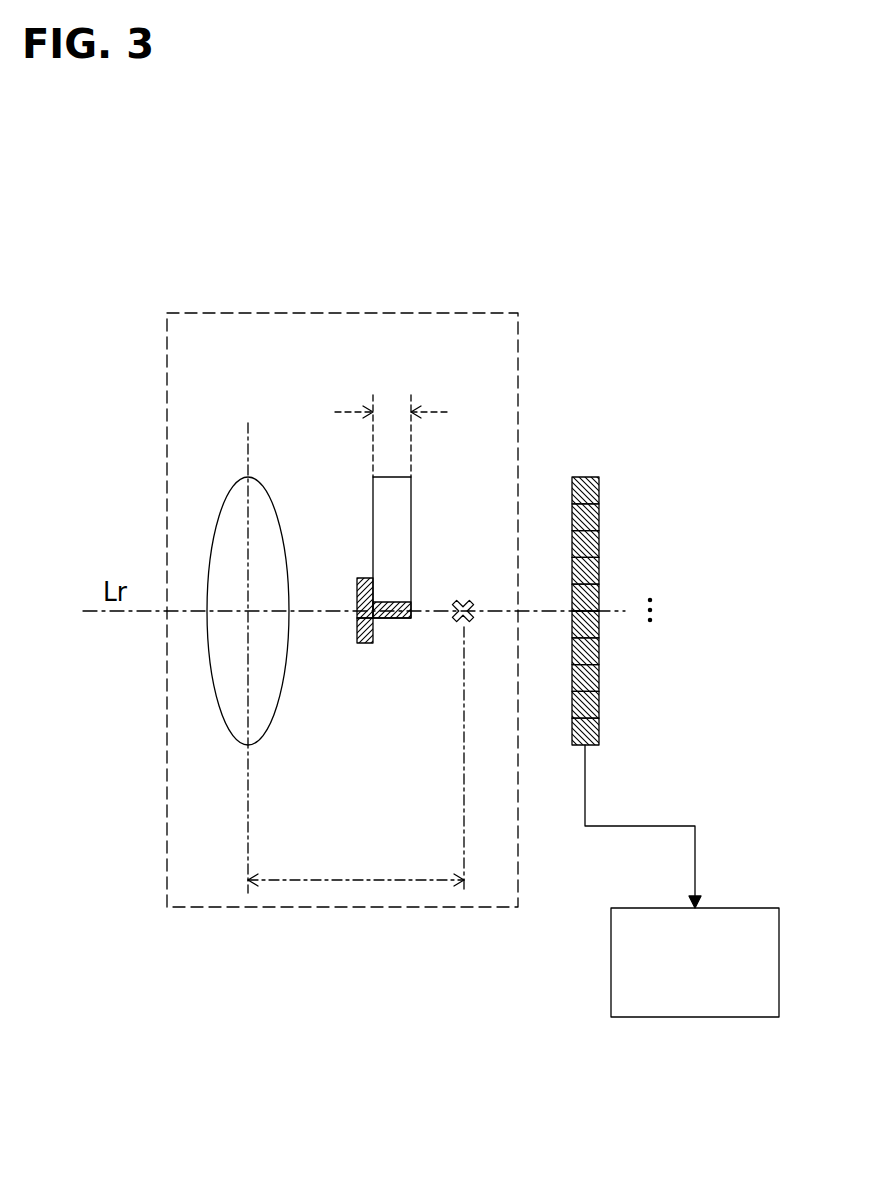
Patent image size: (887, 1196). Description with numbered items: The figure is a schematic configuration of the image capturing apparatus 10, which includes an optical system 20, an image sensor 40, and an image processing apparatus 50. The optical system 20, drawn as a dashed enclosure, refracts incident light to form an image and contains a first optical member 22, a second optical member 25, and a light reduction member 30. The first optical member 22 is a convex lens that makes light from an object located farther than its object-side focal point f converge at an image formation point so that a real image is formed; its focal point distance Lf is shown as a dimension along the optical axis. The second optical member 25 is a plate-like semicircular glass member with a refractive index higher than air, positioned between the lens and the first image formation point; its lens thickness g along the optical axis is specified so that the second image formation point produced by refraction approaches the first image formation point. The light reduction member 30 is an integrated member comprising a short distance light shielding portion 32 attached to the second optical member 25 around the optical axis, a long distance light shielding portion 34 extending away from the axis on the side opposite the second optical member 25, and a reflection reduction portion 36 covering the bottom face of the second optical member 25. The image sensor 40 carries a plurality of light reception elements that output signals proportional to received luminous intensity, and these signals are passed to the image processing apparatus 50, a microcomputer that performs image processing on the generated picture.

The image capturing apparatus 10 is at (519, 252).
The optical system 20 is at (357, 313).
The first optical member 22 is at (277, 500).
The second optical member 25 is at (411, 517).
The light reduction member 30 is at (438, 730).
The short distance light shielding portion 32 is at (357, 632).
The long distance light shielding portion 34 is at (364, 643).
The reflection reduction portion 36 is at (395, 618).
The image sensor 40 is at (680, 462).
The image processing apparatus 50 is at (752, 908).
The lens thickness g is at (392, 428).
The object-side focal point f is at (470, 734).
The focal point distance Lf is at (356, 867).